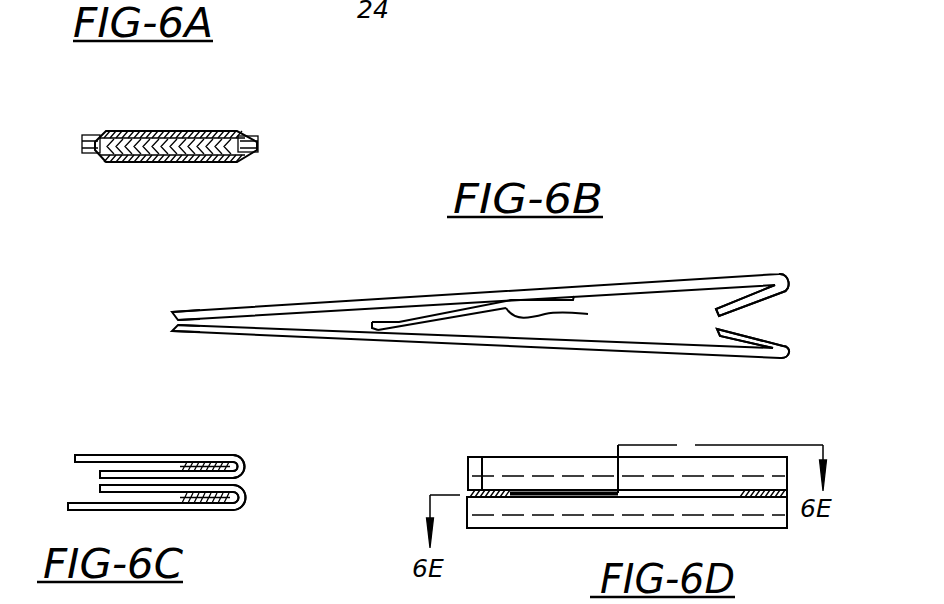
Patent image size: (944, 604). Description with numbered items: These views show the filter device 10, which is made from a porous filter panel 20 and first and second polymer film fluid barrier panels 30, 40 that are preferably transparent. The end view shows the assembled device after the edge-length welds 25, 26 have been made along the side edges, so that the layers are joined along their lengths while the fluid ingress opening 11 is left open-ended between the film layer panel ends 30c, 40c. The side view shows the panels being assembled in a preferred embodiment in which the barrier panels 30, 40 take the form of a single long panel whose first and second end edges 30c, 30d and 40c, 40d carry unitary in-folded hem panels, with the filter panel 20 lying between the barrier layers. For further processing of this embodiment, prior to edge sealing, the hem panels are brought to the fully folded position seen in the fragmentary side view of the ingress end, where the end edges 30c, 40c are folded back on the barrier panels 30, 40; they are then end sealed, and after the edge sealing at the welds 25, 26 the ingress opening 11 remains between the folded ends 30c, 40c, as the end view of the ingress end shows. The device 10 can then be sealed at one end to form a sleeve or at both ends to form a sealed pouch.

In FIG. 6A, the filter device 10 is at (268, 126).
In FIG. 6A, the fluid ingress opening 11 is at (133, 163).
In FIG. 6C, the fluid ingress opening 11 is at (252, 482).
In FIG. 6D, the fluid ingress opening 11 is at (647, 497).
In FIG. 6B, the porous filter panel 20 is at (497, 316).
In FIG. 6A, the edge-length weld 25 is at (82, 146).
In FIG. 6D, the edge-length weld 25 is at (787, 493).
In FIG. 6A, the edge-length weld 26 is at (260, 139).
In FIG. 6D, the edge-length weld 26 is at (482, 470).
In FIG. 6B, the first polymer film fluid barrier panel 30 is at (655, 277).
In FIG. 6C, the first polymer film fluid barrier panel 30 is at (167, 456).
In FIG. 6A, the first end edge of first barrier panel 30c is at (178, 133).
In FIG. 6B, the first end edge of first barrier panel 30c is at (785, 276).
In FIG. 6C, the first end edge of first barrier panel 30c is at (241, 461).
In FIG. 6D, the first end edge of first barrier panel 30c is at (563, 462).
In FIG. 6B, the second end edge of first barrier panel 30d is at (171, 314).
In FIG. 6B, the second polymer film fluid barrier panel 40 is at (640, 352).
In FIG. 6C, the second polymer film fluid barrier panel 40 is at (157, 497).
In FIG. 6A, the first end edge of second barrier panel 40c is at (170, 163).
In FIG. 6B, the first end edge of second barrier panel 40c is at (790, 358).
In FIG. 6C, the first end edge of second barrier panel 40c is at (237, 510).
In FIG. 6D, the first end edge of second barrier panel 40c is at (540, 517).
In FIG. 6B, the second end edge of second barrier panel 40d is at (170, 327).